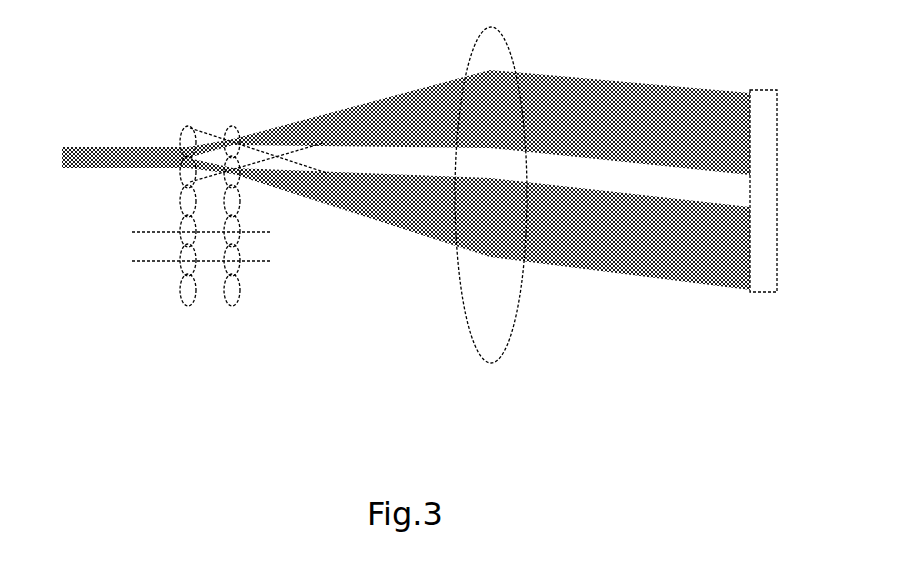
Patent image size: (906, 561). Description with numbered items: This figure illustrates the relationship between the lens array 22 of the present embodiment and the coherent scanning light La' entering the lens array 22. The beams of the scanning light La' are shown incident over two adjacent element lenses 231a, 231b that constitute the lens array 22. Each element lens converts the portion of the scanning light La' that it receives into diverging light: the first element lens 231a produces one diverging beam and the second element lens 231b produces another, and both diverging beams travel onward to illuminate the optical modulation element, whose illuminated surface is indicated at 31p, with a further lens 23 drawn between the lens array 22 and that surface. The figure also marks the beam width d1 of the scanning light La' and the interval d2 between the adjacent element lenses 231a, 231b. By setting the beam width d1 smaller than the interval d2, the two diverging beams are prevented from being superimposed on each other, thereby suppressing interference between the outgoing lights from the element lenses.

The scanning light La' is at (125, 130).
The beam width d1 is at (56, 163).
The interval between adjacent element lenses d2 is at (153, 232).
The lens array 22 is at (175, 242).
The element lens 231a is at (182, 127).
The element lens 231b is at (180, 176).
The lens 23 is at (493, 363).
The screen / image plane 31p is at (765, 293).